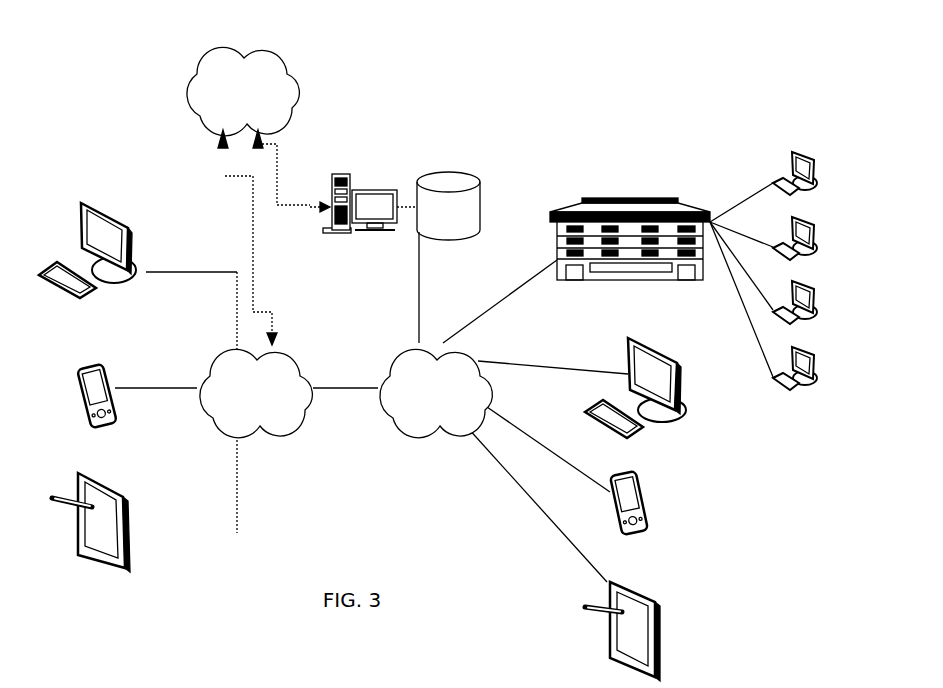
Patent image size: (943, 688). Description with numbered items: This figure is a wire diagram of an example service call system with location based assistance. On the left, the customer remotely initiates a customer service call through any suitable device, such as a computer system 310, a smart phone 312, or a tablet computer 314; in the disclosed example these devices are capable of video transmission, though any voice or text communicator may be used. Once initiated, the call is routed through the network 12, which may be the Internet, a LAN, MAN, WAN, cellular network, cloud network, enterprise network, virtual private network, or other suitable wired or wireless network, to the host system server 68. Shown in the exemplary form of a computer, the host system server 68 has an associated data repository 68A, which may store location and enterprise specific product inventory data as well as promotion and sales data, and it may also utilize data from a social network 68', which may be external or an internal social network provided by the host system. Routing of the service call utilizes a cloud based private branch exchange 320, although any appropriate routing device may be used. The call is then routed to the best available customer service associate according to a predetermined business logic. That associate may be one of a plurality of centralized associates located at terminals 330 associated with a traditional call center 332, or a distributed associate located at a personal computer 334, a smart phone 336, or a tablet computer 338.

The social network 68' is at (222, 82).
The host system server 68 is at (354, 194).
The data repository 68A is at (482, 207).
The computer system 310 is at (82, 203).
The smart phone 312 is at (83, 368).
The tablet computer 314 is at (78, 477).
The network 12 is at (220, 358).
The cloud based private branch exchange (PBX) 320 is at (392, 367).
The traditional call center 332 is at (648, 198).
The terminals 330 is at (822, 189).
The personal computer 334 is at (692, 410).
The smart phone 336 is at (652, 530).
The tablet computer 338 is at (657, 663).